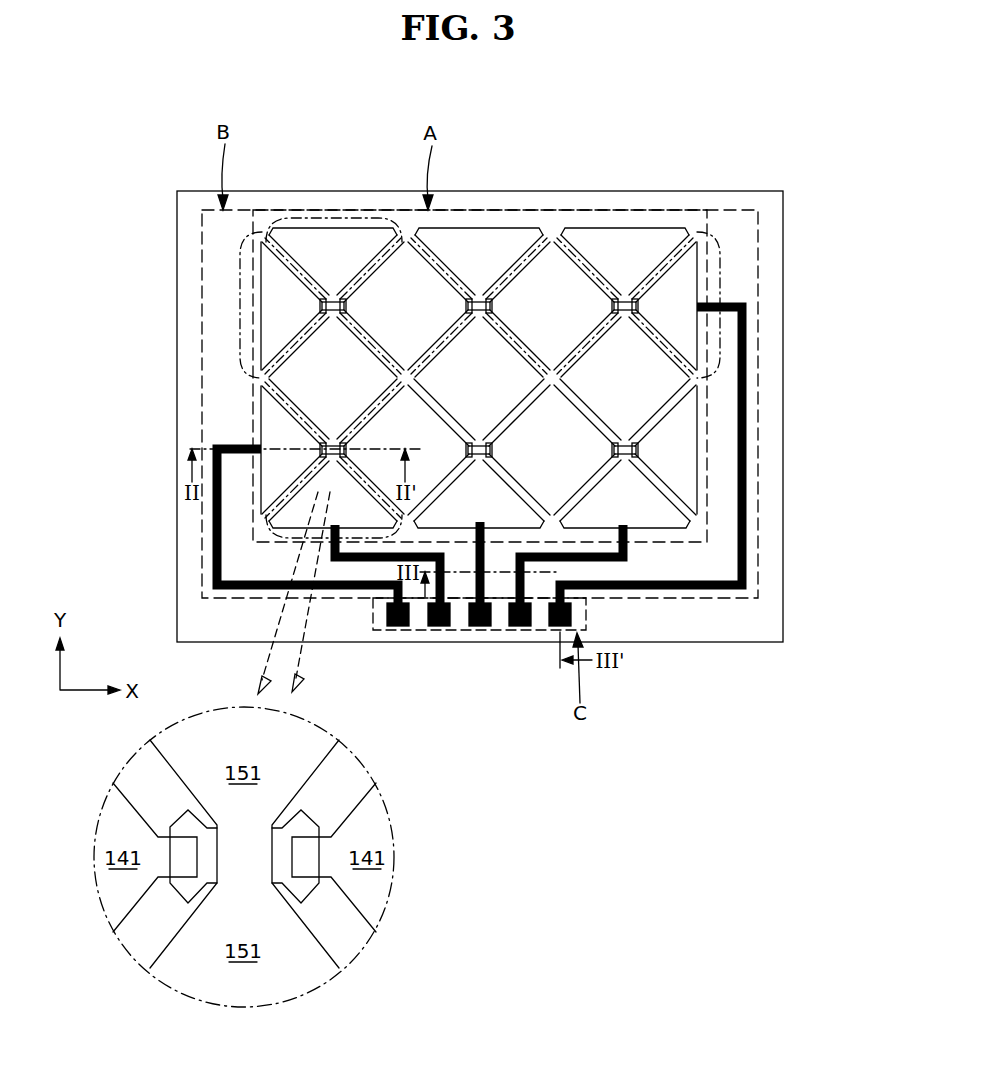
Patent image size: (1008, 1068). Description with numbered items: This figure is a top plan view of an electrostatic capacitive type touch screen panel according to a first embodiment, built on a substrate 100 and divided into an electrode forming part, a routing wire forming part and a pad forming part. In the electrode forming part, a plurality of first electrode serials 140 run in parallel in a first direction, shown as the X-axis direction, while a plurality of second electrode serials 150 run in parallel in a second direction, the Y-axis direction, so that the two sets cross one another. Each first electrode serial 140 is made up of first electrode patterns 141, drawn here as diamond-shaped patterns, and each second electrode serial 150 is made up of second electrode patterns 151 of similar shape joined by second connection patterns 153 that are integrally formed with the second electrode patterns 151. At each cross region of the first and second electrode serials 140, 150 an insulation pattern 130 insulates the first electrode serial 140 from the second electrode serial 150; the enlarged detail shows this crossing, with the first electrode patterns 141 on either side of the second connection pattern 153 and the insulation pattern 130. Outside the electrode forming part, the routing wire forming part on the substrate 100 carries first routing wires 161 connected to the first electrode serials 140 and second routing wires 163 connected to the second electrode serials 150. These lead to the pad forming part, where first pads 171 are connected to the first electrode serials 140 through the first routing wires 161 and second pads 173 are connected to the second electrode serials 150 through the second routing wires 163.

The substrate 100 is at (770, 613).
The insulation pattern 130 is at (303, 888).
The first electrode serial 140 is at (238, 305).
The first electrode pattern 141 is at (408, 255).
The second electrode serial 150 is at (337, 218).
The second electrode pattern 151 is at (362, 240).
The second connection pattern 153 is at (229, 869).
The first routing wire 161 is at (747, 430).
The second routing wire 163 is at (352, 562).
The first pad 171 is at (400, 628).
The second pad 173 is at (440, 628).